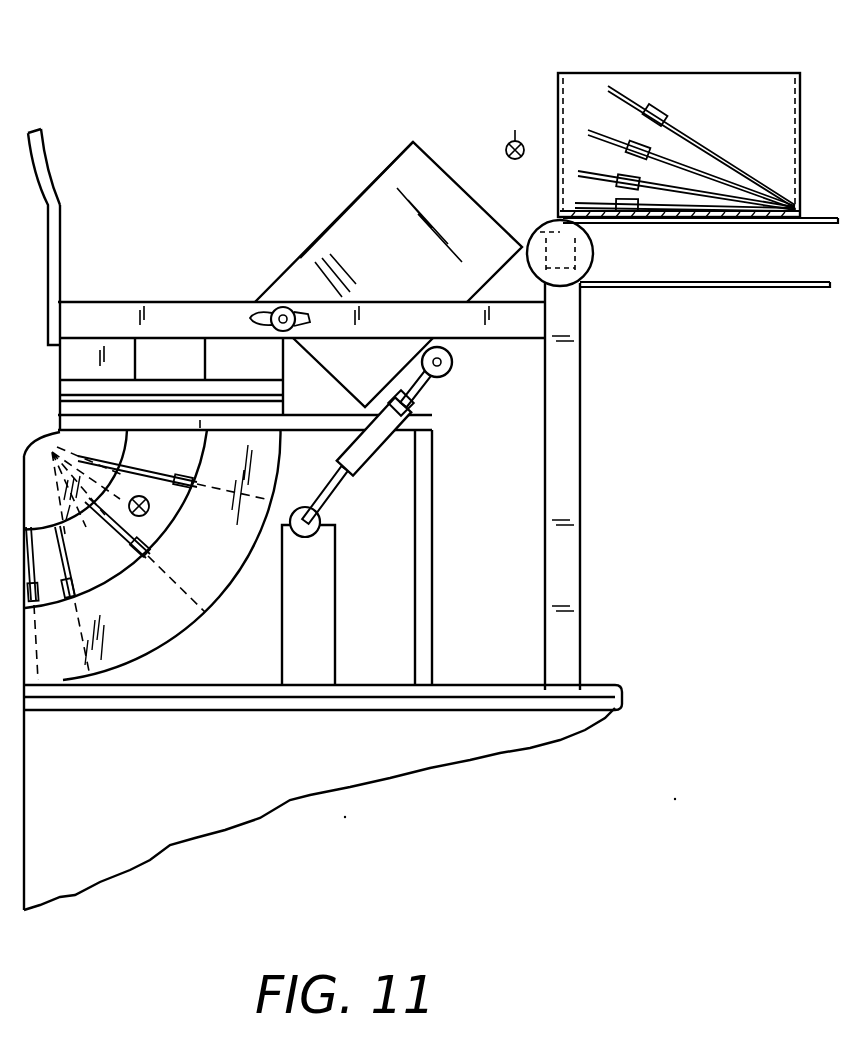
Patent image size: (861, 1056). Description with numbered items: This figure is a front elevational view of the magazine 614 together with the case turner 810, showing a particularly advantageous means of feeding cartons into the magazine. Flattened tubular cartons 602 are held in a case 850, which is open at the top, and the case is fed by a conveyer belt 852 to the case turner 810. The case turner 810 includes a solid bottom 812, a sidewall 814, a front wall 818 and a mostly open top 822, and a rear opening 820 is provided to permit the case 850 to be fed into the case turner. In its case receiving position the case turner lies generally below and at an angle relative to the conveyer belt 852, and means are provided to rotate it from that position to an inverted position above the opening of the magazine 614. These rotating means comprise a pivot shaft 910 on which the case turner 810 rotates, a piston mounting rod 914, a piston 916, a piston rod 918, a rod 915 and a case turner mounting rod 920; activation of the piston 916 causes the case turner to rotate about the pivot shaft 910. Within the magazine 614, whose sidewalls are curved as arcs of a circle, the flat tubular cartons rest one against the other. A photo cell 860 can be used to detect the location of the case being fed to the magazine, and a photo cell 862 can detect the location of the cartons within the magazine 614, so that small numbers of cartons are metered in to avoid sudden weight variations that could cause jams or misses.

The flattened tubular carton 602 is at (683, 125).
The case 850 is at (660, 38).
The rear opening 820 is at (437, 150).
The photo cell 860 is at (498, 122).
The case turner 810 is at (276, 196).
The open top 822 is at (362, 188).
The sidewall 814 is at (272, 227).
The pivot shaft 910 is at (256, 318).
The conveyer belt 852 is at (613, 302).
The solid bottom 812 is at (503, 292).
The case turner mounting rod 920 is at (452, 365).
The piston rod 918 is at (425, 386).
The front wall 818 is at (337, 383).
The piston 916 is at (375, 462).
The photo cell 862 is at (149, 511).
The rod 915 is at (333, 503).
The piston mounting rod 914 is at (300, 540).
The magazine 614 is at (165, 648).